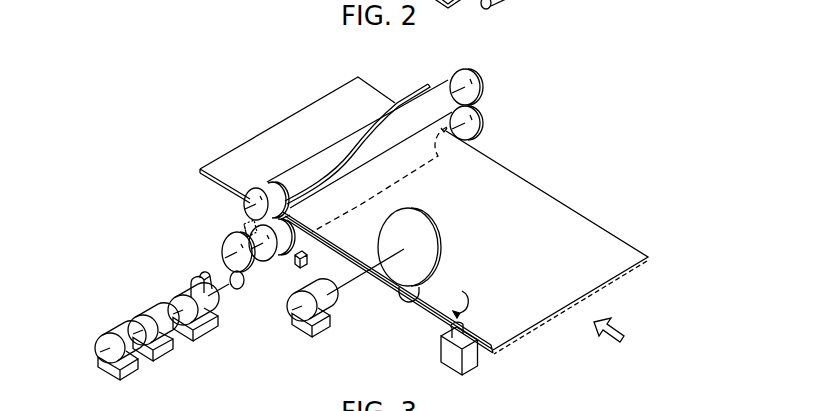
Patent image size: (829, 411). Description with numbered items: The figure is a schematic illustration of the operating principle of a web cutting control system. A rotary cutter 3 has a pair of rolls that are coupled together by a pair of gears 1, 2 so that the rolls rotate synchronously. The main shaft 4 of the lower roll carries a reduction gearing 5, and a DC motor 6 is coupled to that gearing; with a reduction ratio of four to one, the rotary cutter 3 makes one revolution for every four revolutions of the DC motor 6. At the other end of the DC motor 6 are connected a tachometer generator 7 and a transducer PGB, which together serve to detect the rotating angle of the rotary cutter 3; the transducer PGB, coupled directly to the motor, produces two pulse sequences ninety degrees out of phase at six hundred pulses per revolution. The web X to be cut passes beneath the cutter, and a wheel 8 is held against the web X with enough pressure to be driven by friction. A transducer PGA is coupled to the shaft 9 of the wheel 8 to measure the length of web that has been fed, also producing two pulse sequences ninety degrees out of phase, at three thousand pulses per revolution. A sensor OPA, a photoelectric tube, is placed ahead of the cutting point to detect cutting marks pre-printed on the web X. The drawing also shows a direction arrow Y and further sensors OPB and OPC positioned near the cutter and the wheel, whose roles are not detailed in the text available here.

The gear 1 is at (481, 127).
The gear 2 is at (462, 68).
The rotary cutter 3 is at (407, 112).
The main shaft 4 is at (259, 266).
The reduction gearing 5 is at (227, 268).
The DC motor 6 is at (177, 295).
The tachometer generator 7 is at (153, 318).
The wheel 8 is at (409, 227).
The shaft 9 is at (348, 283).
The web X is at (500, 160).
The rotation direction Y is at (458, 302).
The sensor OPA is at (470, 358).
The optical sensor B OPB is at (297, 268).
The optical sensor C OPC is at (243, 228).
The transducer PGA is at (323, 303).
The transducer PGB is at (100, 350).